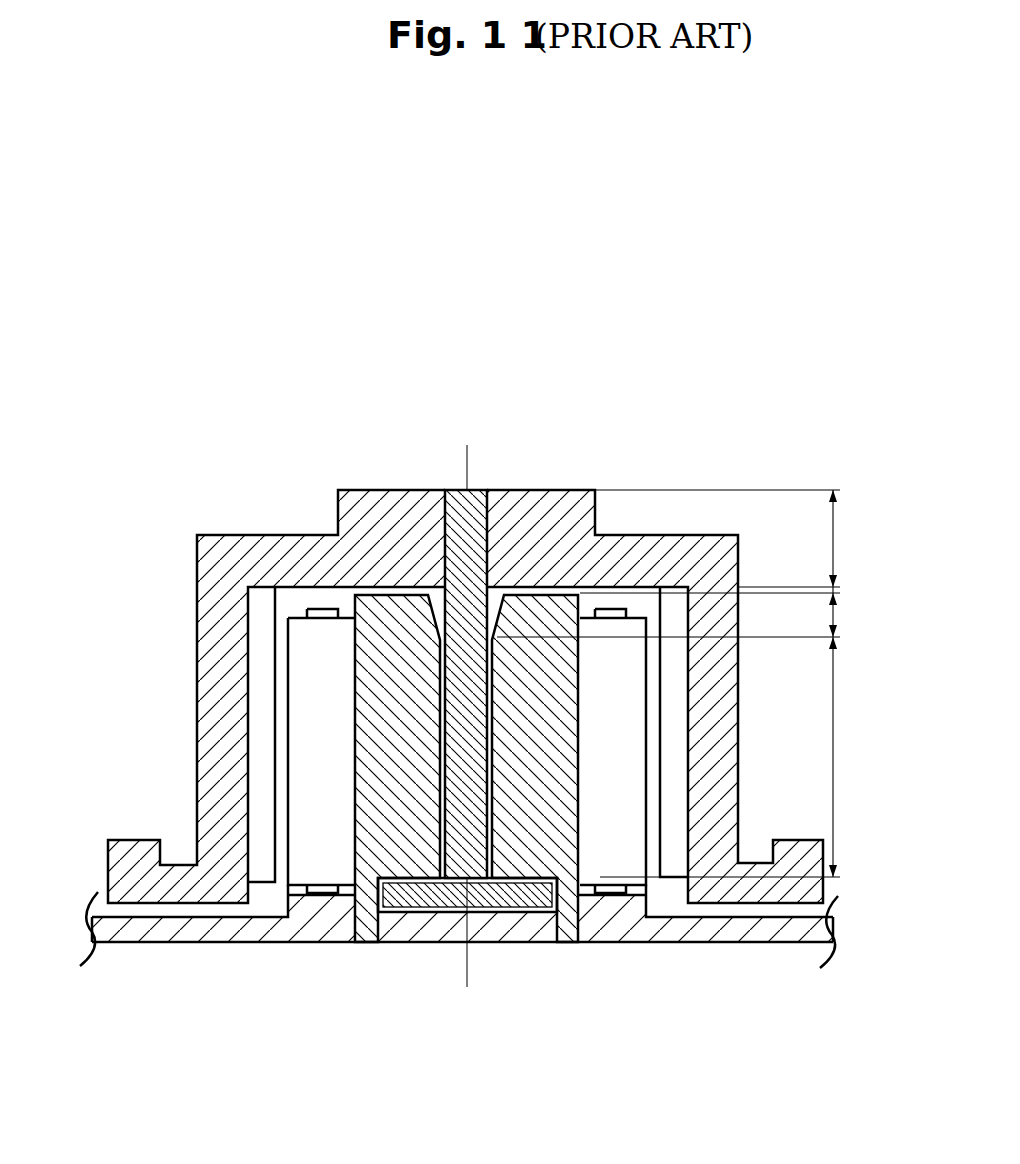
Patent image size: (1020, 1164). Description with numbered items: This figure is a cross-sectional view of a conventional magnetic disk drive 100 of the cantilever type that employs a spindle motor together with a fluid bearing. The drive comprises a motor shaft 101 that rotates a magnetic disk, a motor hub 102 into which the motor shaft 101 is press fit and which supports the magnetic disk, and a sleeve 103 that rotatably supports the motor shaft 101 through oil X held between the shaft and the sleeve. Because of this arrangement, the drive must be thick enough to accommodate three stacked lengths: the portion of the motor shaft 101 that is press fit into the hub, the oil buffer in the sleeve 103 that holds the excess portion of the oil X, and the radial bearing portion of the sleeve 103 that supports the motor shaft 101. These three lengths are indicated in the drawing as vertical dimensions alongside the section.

The magnetic disk drive 100 is at (468, 320).
The motor shaft 101 is at (481, 500).
The motor hub 102 is at (572, 490).
The sleeve 103 is at (397, 600).
The oil X is at (442, 585).